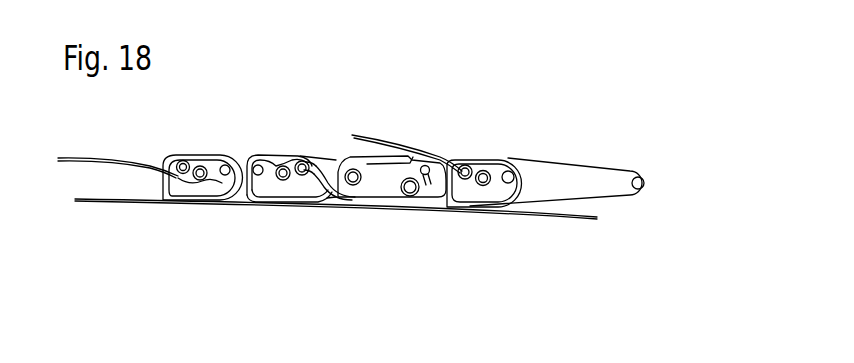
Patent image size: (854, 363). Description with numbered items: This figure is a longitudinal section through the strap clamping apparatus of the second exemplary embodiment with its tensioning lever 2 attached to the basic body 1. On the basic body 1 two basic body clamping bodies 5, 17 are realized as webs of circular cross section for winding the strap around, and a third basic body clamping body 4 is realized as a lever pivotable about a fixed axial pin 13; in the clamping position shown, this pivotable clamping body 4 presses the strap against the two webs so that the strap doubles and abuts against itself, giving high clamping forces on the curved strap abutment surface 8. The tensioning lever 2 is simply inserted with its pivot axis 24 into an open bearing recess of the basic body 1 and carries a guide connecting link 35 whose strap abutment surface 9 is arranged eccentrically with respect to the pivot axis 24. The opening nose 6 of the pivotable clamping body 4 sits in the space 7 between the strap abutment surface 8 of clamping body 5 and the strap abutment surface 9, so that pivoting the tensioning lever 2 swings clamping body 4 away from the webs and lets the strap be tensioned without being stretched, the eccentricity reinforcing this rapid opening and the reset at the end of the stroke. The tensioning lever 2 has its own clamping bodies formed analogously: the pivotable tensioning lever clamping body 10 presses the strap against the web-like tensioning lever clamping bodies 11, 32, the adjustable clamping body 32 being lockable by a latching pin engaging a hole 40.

The basic body 1 is at (237, 190).
The tensioning lever 2 is at (592, 166).
The third basic body clamping body 4 is at (276, 190).
The basic body clamping body 5 is at (300, 163).
The opening nose 6 is at (318, 182).
The space 7 is at (326, 166).
The strap abutment surface 8 is at (313, 163).
The strap abutment surface 9 is at (333, 196).
The tensioning lever clamping body 10 is at (481, 193).
The tensioning lever clamping body 11 is at (465, 165).
The axial pin 13 is at (258, 165).
The basic body clamping body 17 is at (282, 168).
The pivot axis 24 is at (360, 164).
The adjustable tensioning lever clamping body 32 is at (485, 171).
The guide connecting link 35 is at (352, 186).
The hole 40 is at (427, 176).